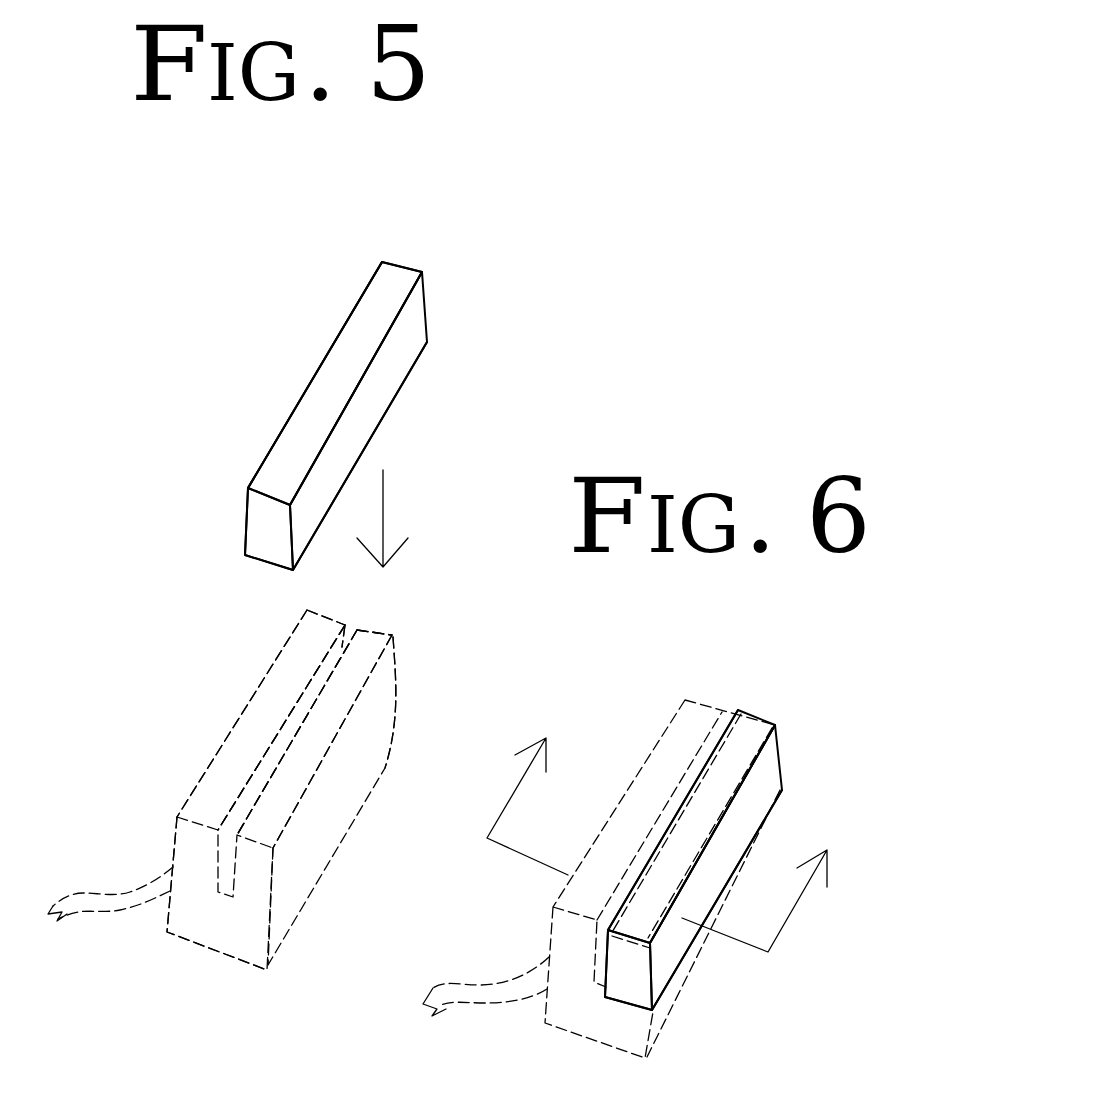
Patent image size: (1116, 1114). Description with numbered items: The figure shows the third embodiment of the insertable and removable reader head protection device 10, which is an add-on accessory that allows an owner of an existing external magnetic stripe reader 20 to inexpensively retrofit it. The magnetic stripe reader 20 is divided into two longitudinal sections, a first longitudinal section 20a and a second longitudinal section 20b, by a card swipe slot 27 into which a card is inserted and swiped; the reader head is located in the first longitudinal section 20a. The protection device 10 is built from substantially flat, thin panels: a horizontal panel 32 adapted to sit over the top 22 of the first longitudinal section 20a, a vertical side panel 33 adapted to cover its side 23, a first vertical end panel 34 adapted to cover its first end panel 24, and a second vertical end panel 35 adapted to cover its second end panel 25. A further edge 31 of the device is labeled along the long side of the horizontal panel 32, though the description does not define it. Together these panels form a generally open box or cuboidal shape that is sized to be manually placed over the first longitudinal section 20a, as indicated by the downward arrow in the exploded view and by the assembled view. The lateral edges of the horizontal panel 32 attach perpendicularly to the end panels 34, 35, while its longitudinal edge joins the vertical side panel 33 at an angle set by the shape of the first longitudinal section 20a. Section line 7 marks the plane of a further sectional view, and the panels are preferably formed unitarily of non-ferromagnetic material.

In FIG. 5, the insertable and removable reader head protection device 10 is at (477, 283).
In FIG. 6, the insertable and removable reader head protection device 10 is at (773, 668).
In FIG. 5, the magnetic stripe reader 20 is at (200, 980).
In FIG. 6, the magnetic stripe reader 20 is at (601, 879).
In FIG. 5, the first longitudinal section 20a is at (420, 597).
In FIG. 5, the second longitudinal section 20b is at (214, 686).
In FIG. 5, the top 22 is at (342, 753).
In FIG. 5, the side 23 is at (347, 832).
In FIG. 5, the first end panel 24 is at (212, 948).
In FIG. 5, the second end panel 25 is at (390, 635).
In FIG. 6, the card swipe slot 27 is at (727, 718).
In FIG. 5, the side edge of bar 31 is at (345, 317).
In FIG. 5, the horizontal panel 32 is at (362, 398).
In FIG. 6, the horizontal panel 32 is at (665, 858).
In FIG. 5, the vertical side panel 33 is at (385, 359).
In FIG. 6, the vertical side panel 33 is at (777, 813).
In FIG. 5, the first vertical end panel 34 is at (287, 553).
In FIG. 6, the first vertical end panel 34 is at (650, 993).
In FIG. 5, the second vertical end panel 35 is at (408, 262).
In FIG. 6, the section line VII-VII 7 is at (657, 845).